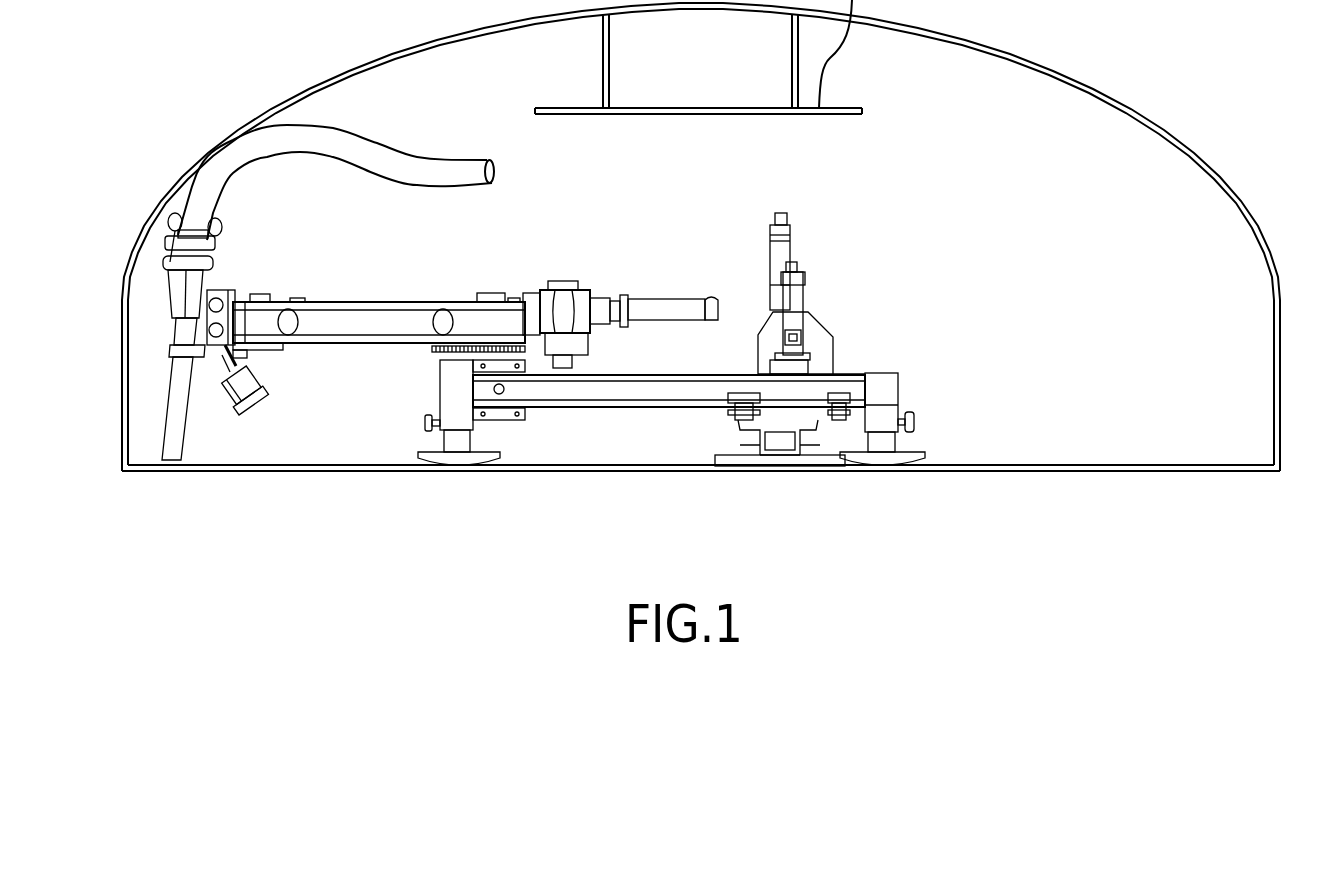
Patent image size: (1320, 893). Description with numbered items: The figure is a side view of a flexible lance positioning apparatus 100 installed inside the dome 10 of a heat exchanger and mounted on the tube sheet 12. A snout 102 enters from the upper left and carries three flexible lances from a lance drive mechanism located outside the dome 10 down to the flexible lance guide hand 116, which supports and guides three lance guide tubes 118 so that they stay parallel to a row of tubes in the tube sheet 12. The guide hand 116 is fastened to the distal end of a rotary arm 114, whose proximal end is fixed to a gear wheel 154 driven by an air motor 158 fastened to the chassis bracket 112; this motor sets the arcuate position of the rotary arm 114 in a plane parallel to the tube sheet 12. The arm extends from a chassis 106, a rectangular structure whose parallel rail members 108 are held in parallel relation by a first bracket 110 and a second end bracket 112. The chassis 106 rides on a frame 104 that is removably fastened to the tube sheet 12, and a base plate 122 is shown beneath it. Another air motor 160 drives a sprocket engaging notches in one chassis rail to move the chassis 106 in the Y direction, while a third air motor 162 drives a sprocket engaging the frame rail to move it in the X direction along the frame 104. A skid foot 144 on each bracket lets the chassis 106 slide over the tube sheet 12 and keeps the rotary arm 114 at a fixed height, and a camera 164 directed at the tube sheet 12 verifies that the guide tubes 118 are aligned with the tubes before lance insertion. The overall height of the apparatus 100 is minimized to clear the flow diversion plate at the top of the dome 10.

The dome 10 is at (1000, 49).
The tube sheet 12 is at (1060, 471).
The apparatus 100 is at (962, 280).
The snout 102 is at (378, 143).
The frame 104 is at (712, 455).
The chassis 106 is at (876, 358).
The rail members 108 is at (637, 406).
The first bracket 110 is at (897, 388).
The second end bracket 112 is at (504, 423).
The rotary arm 114 is at (374, 300).
The flexible lance guide hand 116 is at (232, 276).
The lance guide tubes 118 is at (186, 436).
The base plate 122 is at (722, 467).
The skid foot 144 is at (418, 458).
The gear wheel 154 is at (434, 349).
The air motor 158 is at (665, 298).
The air motor 160 is at (792, 238).
The third air motor 162 is at (806, 297).
The camera 164 is at (240, 400).